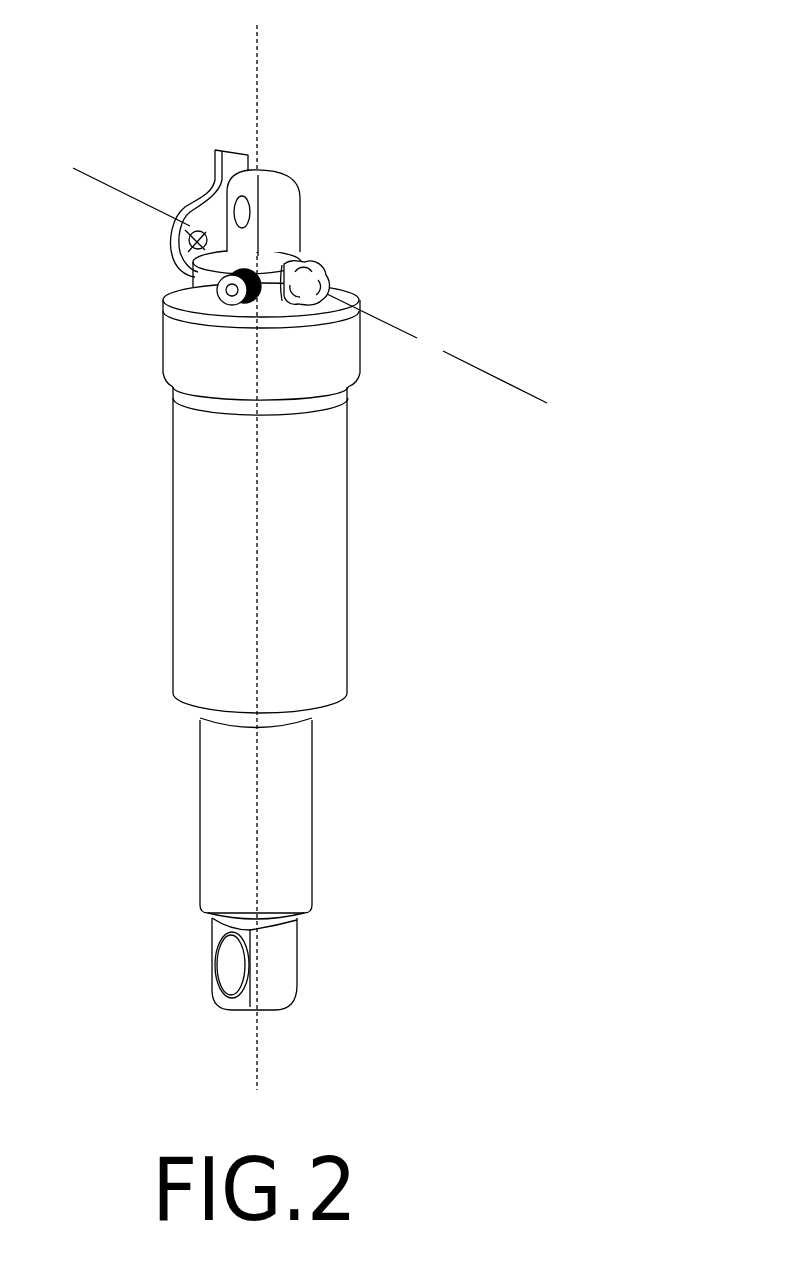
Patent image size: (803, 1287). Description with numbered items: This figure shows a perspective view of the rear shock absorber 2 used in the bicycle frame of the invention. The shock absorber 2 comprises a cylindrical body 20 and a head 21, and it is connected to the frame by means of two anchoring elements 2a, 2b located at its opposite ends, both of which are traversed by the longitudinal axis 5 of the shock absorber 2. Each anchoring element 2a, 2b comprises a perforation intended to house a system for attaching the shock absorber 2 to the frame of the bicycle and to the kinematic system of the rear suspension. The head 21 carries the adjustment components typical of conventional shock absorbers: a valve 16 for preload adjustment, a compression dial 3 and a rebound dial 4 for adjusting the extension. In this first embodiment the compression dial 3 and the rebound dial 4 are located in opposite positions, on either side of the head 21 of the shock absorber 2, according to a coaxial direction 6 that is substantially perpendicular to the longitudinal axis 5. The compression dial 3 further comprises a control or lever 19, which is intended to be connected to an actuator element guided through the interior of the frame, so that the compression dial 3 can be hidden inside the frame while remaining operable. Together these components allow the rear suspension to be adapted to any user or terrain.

The rear shock absorber 2 is at (485, 78).
The anchoring element 2a is at (280, 203).
The anchoring element 2b is at (257, 964).
The compression dial 3 is at (161, 173).
The rebound dial 4 is at (312, 287).
The longitudinal axis 5 is at (257, 504).
The coaxial direction 6 is at (393, 323).
The valve 16 is at (228, 293).
The lever 19 is at (230, 160).
The cylindrical body 20 is at (292, 588).
The head 21 is at (362, 372).